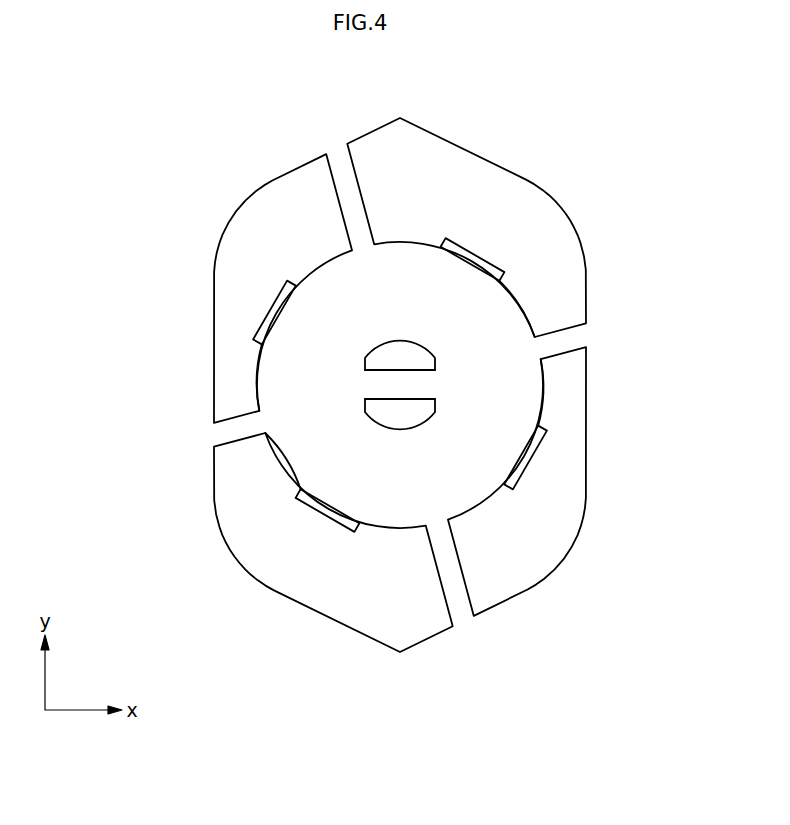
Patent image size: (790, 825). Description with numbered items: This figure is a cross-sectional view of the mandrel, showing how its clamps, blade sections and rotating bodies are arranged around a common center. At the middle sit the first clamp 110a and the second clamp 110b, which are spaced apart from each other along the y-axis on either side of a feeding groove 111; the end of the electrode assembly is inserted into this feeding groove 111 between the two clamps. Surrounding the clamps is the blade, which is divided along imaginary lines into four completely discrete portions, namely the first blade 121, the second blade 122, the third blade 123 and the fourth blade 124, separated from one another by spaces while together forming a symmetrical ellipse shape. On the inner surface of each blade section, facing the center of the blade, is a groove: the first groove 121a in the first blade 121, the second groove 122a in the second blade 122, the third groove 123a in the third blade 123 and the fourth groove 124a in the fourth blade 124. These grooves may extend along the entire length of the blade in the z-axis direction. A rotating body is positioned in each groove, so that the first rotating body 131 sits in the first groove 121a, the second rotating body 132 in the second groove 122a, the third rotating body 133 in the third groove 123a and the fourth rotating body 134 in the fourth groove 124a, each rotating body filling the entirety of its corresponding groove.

The first clamp 110a is at (418, 357).
The second clamp 110b is at (423, 410).
The feeding groove 111 is at (405, 387).
The first blade 121 is at (540, 204).
The second blade 122 is at (537, 562).
The third blade 123 is at (300, 587).
The fourth blade 124 is at (265, 205).
The first groove 121a is at (495, 266).
The second groove 122a is at (537, 424).
The third groove 123a is at (312, 493).
The fourth groove 124a is at (272, 320).
The first rotating body 131 is at (450, 257).
The second rotating body 132 is at (533, 428).
The third rotating body 133 is at (308, 491).
The fourth rotating body 134 is at (262, 341).